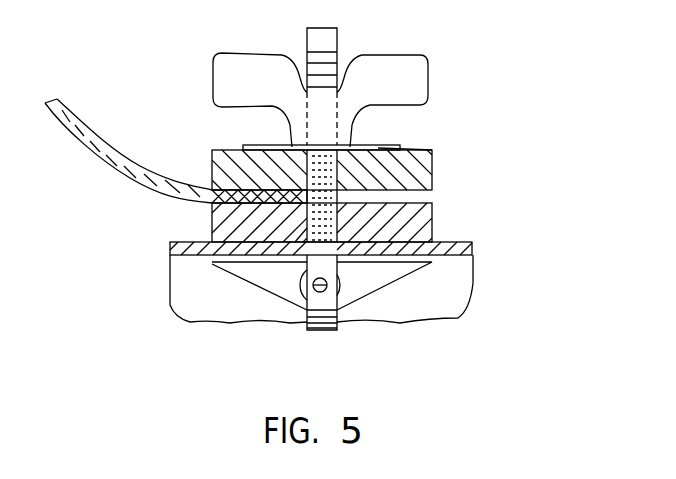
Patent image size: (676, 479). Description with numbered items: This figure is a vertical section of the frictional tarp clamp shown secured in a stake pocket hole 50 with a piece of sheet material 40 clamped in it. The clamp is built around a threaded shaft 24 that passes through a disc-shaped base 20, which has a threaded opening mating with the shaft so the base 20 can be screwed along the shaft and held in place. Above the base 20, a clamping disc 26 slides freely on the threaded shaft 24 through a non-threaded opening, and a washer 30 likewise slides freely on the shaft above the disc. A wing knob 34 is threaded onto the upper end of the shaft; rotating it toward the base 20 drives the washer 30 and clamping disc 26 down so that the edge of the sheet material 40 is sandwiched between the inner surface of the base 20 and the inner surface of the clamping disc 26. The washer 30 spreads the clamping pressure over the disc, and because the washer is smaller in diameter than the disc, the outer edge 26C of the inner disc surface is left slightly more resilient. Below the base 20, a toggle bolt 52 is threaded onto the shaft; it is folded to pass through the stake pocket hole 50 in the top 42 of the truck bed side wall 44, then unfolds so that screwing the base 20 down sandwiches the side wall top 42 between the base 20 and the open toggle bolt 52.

The base 20 is at (432, 215).
The threaded shaft 24 is at (337, 50).
The clamping disc 26 is at (432, 163).
The outer edge of the inner disc surface 26C is at (212, 188).
The washer 30 is at (378, 148).
The wing knob 34 is at (410, 70).
The sheet material 40 is at (100, 160).
The top of the side wall 42 is at (470, 242).
The side wall 44 is at (183, 290).
The stake pocket hole 50 is at (360, 262).
The toggle bolt 52 is at (377, 293).